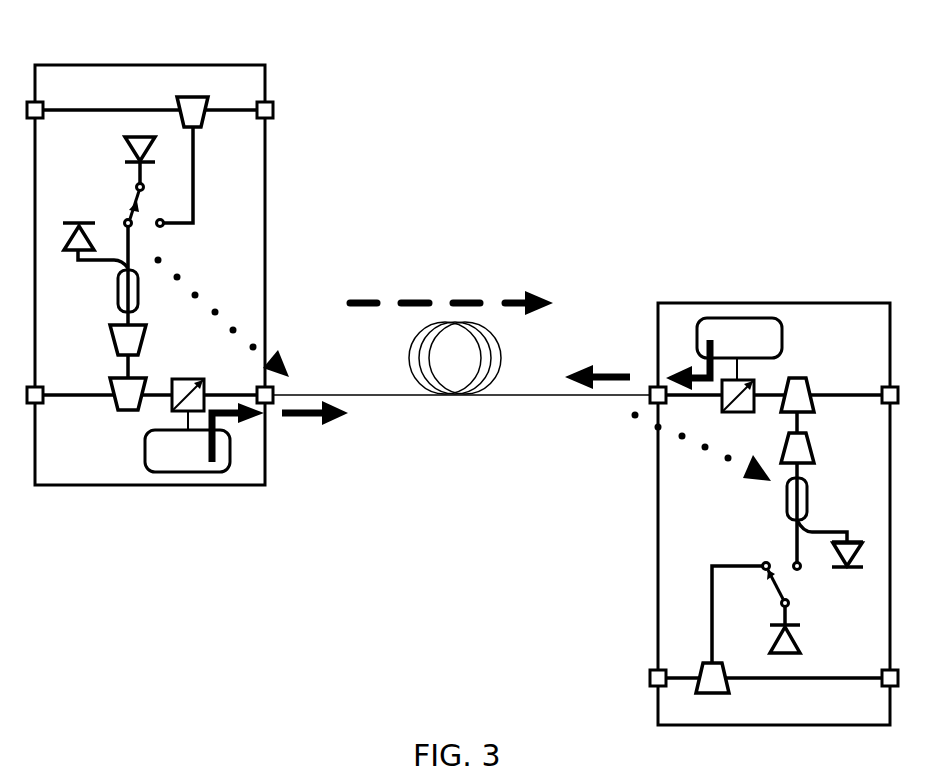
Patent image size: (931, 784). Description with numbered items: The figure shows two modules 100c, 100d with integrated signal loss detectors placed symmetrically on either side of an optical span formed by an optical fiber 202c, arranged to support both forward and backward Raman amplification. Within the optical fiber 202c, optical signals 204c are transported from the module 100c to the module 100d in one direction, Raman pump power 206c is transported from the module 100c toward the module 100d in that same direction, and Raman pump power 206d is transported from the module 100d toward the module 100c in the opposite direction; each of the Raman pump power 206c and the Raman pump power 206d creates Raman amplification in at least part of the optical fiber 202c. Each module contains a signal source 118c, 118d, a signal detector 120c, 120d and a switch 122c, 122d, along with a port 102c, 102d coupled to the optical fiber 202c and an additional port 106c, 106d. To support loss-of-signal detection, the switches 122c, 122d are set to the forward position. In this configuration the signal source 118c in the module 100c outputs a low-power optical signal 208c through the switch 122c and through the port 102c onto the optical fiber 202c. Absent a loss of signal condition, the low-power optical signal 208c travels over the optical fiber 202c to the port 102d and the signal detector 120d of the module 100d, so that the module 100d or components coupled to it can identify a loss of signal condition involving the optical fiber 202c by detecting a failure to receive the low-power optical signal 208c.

The module 100c is at (120, 58).
The module 100d is at (760, 297).
The port 102c is at (271, 406).
The port 102d is at (655, 385).
The additional optical port of first node 106c is at (272, 100).
The additional optical port of second node 106d is at (653, 688).
The signal source 118c is at (128, 153).
The signal source 118d is at (796, 641).
The signal detector 120c is at (73, 261).
The signal detector 120d is at (853, 532).
The switch 122c is at (149, 236).
The switch 122d is at (776, 553).
The optical fiber 202c is at (400, 401).
The optical signals 204c is at (419, 297).
The Raman pump power 206c is at (309, 406).
The Raman pump power 206d is at (614, 384).
The low-power optical signal 208c is at (239, 324).